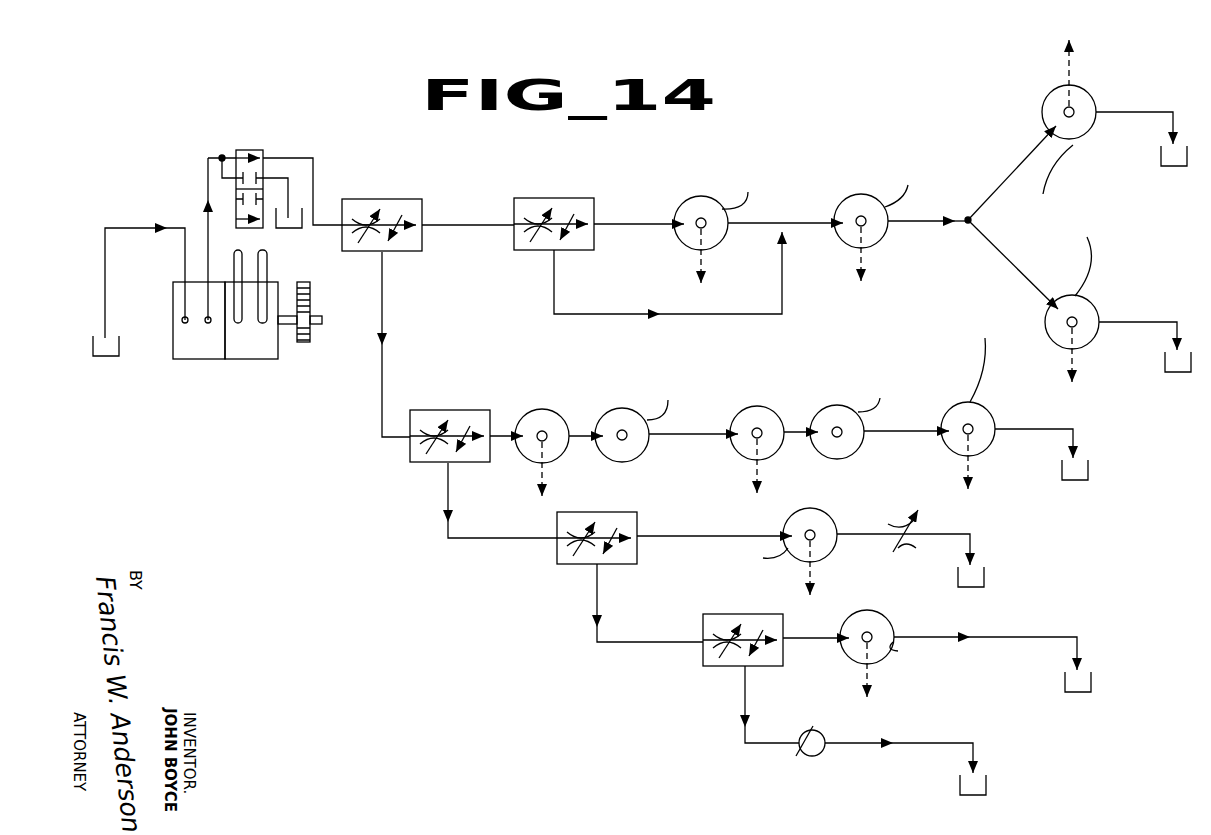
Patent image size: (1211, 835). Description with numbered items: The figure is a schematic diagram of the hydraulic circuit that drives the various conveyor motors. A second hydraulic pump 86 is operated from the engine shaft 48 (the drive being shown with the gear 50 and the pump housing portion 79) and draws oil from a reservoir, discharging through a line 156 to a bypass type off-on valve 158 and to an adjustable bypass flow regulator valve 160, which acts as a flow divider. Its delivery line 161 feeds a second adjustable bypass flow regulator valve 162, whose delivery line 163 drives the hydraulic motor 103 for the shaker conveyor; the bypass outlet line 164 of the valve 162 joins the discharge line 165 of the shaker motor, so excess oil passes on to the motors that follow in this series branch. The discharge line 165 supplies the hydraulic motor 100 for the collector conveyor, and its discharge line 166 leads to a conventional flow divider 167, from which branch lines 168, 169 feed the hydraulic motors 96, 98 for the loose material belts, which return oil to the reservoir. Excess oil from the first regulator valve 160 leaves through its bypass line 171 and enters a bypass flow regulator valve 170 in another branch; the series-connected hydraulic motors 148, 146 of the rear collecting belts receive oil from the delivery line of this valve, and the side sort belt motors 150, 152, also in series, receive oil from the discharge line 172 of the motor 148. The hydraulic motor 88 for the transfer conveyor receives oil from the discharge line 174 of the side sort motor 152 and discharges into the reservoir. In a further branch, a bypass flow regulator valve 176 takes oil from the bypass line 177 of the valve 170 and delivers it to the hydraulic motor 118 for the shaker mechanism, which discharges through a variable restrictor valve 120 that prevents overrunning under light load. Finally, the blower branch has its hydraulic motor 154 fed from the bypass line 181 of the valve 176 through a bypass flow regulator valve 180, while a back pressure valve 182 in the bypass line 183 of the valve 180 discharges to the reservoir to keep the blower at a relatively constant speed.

The engine shaft 48 is at (314, 324).
The drive gear 50 is at (308, 295).
The fluid reservoir compartment 79 is at (257, 360).
The second hydraulic pump 86 is at (205, 360).
The hydraulic motor 88 is at (991, 436).
The hydraulic motor 96 is at (1093, 332).
The hydraulic motor 98 is at (1095, 100).
The hydraulic motor 100 is at (848, 243).
The hydraulic motor 103 is at (682, 207).
The hydraulic motor 118 is at (823, 517).
The variable restrictor valve 120 is at (910, 543).
The hydraulic motor 146 is at (530, 414).
The hydraulic motor 148 is at (632, 453).
The hydraulic motor 150 is at (734, 440).
The hydraulic motor 152 is at (857, 446).
The hydraulic motor 154 is at (853, 662).
The line 156 is at (208, 213).
The bypass type off-on valve 158 is at (258, 150).
The adjustable bypass flow regulator valve 160 is at (392, 200).
The delivery line 161 is at (458, 226).
The adjustable bypass flow regulator valve 162 is at (567, 198).
The delivery line 163 is at (638, 226).
The bypass outlet line 164 is at (612, 313).
The discharge line 165 is at (762, 226).
The discharge line 166 is at (905, 224).
The flow divider 167 is at (966, 222).
The branch line 168 is at (1025, 277).
The branch line 169 is at (1027, 157).
The bypass flow regulator valve 170 is at (438, 410).
The hydraulic line 171 is at (383, 321).
The discharge line 172 is at (674, 434).
The discharge line 174 is at (882, 432).
The bypass flow regulator valve 176 is at (565, 564).
The bypass line 177 is at (448, 499).
The bypass flow regulator valve 180 is at (723, 664).
The bypass line 181 is at (596, 598).
The back pressure valve 182 is at (810, 757).
The bypass line 183 is at (745, 703).